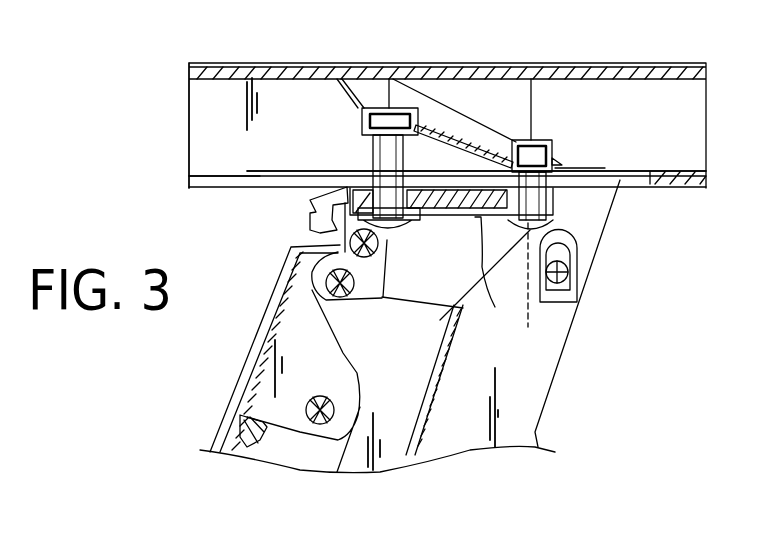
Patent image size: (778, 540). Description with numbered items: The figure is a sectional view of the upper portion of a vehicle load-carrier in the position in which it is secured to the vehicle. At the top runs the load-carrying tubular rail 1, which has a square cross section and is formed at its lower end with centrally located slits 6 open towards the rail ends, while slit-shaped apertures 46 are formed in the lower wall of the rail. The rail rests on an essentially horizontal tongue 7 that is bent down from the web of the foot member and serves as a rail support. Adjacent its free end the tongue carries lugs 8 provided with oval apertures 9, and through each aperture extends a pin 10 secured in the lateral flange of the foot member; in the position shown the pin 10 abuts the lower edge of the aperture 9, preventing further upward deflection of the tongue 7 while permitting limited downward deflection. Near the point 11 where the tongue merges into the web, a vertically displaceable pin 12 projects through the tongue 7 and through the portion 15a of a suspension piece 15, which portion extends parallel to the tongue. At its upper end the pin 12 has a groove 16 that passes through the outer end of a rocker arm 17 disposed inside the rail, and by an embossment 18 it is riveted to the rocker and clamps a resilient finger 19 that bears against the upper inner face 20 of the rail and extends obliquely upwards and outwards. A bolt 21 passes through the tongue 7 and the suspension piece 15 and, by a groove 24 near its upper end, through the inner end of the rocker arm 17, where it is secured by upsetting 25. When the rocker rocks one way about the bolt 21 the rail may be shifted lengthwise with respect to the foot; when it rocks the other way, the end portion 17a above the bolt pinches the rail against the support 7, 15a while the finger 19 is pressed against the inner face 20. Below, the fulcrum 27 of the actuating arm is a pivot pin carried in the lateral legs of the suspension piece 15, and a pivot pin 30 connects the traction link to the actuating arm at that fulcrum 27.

The load-carrying tubular rail 1 is at (617, 62).
The slits 6 is at (252, 172).
The tongue 7 is at (592, 232).
The lugs 8 is at (586, 252).
The oval apertures 9 is at (572, 274).
The pin 10 is at (580, 298).
The point 11 is at (340, 192).
The pin 12 is at (392, 118).
The suspension piece 15 is at (448, 284).
The portion 15a is at (483, 277).
The groove 16 is at (413, 110).
The rocker arm 17 is at (478, 128).
The rocker means end portion 17a is at (570, 157).
The embossment 18 is at (395, 112).
The resilient finger 19 is at (358, 110).
The upper inner face 20 is at (227, 79).
The bolt 21 is at (592, 180).
The groove 24 is at (528, 141).
The upsetting 25 is at (553, 160).
The fulcrum 27 is at (318, 425).
The pivot pin 30 is at (325, 283).
The slit-shaped apertures 46 is at (207, 176).